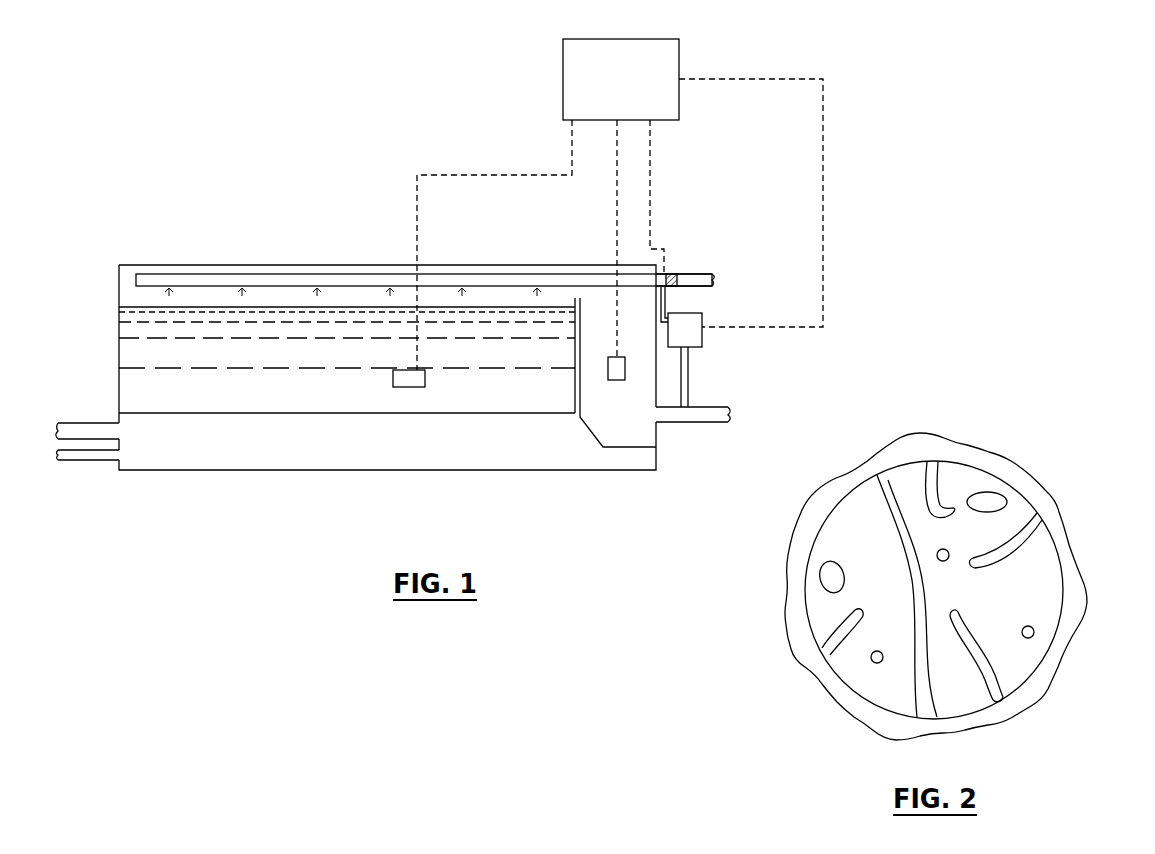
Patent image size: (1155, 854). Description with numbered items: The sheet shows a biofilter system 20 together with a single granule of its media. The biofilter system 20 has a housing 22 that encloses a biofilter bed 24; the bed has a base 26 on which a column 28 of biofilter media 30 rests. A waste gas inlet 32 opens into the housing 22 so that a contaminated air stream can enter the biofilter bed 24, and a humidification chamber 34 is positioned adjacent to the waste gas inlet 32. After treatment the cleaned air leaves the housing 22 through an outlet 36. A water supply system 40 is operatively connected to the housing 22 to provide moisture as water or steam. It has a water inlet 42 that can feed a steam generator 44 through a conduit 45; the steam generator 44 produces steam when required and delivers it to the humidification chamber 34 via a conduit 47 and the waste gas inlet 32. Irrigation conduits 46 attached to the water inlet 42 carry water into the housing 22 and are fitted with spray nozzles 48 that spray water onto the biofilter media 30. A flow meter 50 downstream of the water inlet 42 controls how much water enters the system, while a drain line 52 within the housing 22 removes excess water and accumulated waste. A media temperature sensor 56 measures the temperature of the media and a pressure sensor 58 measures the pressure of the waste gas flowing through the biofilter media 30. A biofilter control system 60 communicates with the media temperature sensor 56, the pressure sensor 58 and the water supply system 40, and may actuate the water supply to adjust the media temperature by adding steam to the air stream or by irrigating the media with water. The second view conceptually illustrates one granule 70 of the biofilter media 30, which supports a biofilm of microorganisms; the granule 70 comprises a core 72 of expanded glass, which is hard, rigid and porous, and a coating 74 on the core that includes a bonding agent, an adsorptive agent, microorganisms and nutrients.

In FIG. 1, the biofilter system 20 is at (110, 224).
In FIG. 1, the housing 22 is at (240, 470).
In FIG. 1, the biofilter bed 24 is at (140, 353).
In FIG. 1, the base 26 is at (235, 413).
In FIG. 1, the column 28 is at (506, 390).
In FIG. 1, the biofilter media 30 is at (310, 388).
In FIG. 1, the waste gas inlet 32 is at (685, 423).
In FIG. 1, the humidification chamber 34 is at (598, 312).
In FIG. 1, the outlet 36 is at (95, 423).
In FIG. 1, the water supply system 40 is at (757, 228).
In FIG. 1, the water inlet 42 is at (700, 272).
In FIG. 1, the steam generator 44 is at (702, 320).
In FIG. 1, the conduit 45 is at (666, 300).
In FIG. 1, the irrigation conduits 46 is at (500, 277).
In FIG. 1, the conduit 47 is at (688, 370).
In FIG. 1, the spray nozzles 48 is at (150, 301).
In FIG. 1, the flow meter 50 is at (672, 273).
In FIG. 1, the drain line 52 is at (90, 462).
In FIG. 1, the media temperature sensor 56 is at (410, 388).
In FIG. 1, the pressure sensor 58 is at (617, 381).
In FIG. 1, the biofilter control system 60 is at (563, 68).
In FIG. 2, the granule 70 is at (1015, 736).
In FIG. 2, the core 72 is at (1050, 608).
In FIG. 2, the coating 74 is at (1036, 488).